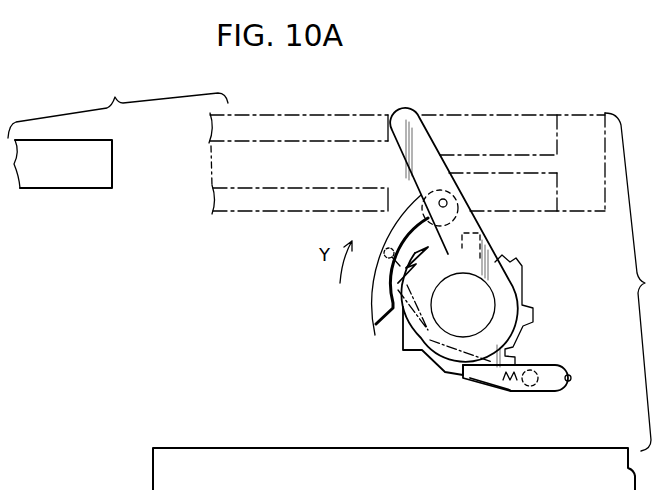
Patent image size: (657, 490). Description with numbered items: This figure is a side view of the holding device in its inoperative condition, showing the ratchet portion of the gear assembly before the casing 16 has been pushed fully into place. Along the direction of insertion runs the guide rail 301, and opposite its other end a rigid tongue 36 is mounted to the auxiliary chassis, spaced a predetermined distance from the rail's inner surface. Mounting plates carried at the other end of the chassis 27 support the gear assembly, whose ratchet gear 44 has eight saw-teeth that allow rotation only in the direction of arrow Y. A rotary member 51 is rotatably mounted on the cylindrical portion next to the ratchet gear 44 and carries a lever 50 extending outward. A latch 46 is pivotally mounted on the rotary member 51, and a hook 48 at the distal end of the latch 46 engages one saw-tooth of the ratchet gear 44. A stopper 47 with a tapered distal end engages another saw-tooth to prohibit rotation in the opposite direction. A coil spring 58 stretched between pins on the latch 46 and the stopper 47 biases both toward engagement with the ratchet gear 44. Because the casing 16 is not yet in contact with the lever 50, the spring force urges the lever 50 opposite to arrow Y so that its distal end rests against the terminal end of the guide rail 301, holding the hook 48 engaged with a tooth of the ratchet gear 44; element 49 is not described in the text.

The casing 16 is at (74, 185).
The guide rail 301 is at (305, 118).
The rigid tongue 36 is at (513, 152).
The lever 50 is at (410, 118).
The rotary member 51 is at (493, 234).
The ratchet gear 44 is at (516, 278).
The latch 46 is at (368, 294).
The hook 48 is at (378, 316).
The coil spring 58 is at (437, 351).
The stopper 47 is at (542, 363).
The link 49 is at (477, 379).
The chassis 27 is at (563, 447).